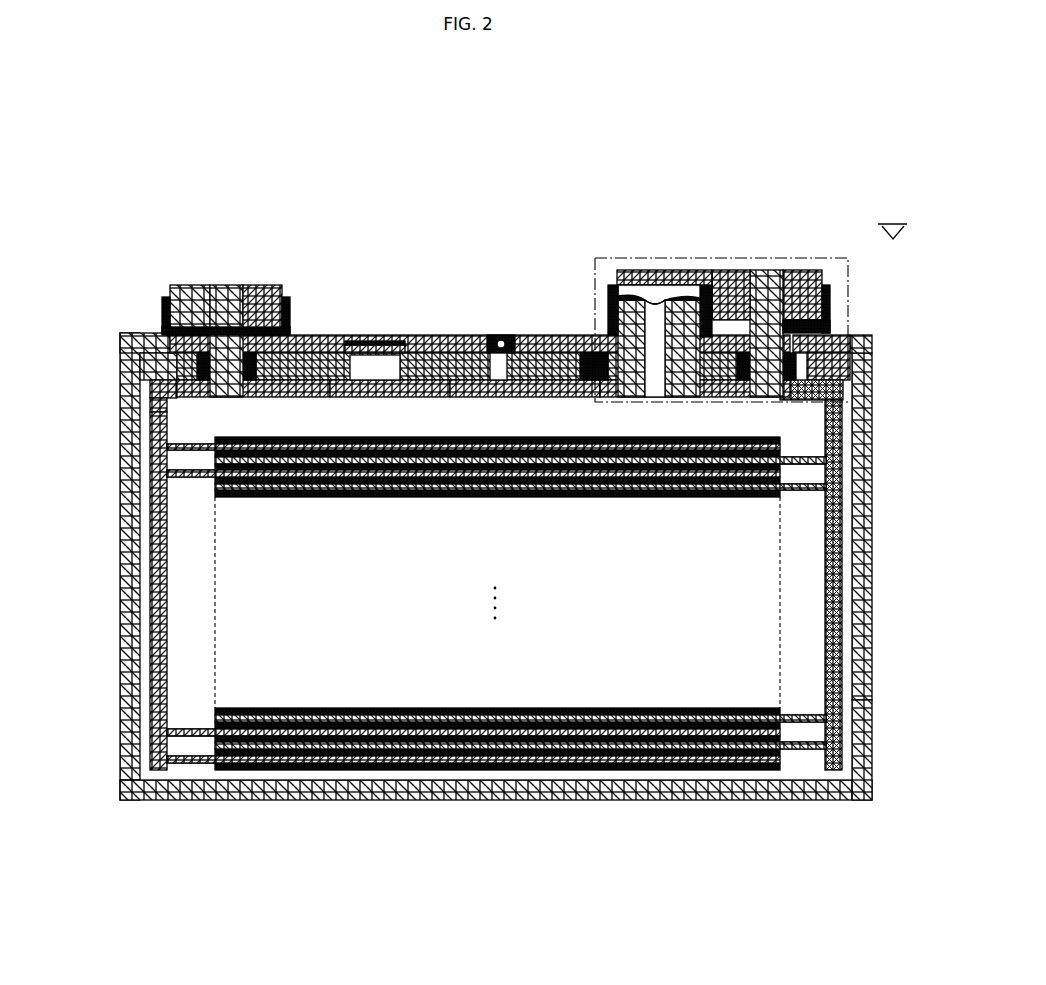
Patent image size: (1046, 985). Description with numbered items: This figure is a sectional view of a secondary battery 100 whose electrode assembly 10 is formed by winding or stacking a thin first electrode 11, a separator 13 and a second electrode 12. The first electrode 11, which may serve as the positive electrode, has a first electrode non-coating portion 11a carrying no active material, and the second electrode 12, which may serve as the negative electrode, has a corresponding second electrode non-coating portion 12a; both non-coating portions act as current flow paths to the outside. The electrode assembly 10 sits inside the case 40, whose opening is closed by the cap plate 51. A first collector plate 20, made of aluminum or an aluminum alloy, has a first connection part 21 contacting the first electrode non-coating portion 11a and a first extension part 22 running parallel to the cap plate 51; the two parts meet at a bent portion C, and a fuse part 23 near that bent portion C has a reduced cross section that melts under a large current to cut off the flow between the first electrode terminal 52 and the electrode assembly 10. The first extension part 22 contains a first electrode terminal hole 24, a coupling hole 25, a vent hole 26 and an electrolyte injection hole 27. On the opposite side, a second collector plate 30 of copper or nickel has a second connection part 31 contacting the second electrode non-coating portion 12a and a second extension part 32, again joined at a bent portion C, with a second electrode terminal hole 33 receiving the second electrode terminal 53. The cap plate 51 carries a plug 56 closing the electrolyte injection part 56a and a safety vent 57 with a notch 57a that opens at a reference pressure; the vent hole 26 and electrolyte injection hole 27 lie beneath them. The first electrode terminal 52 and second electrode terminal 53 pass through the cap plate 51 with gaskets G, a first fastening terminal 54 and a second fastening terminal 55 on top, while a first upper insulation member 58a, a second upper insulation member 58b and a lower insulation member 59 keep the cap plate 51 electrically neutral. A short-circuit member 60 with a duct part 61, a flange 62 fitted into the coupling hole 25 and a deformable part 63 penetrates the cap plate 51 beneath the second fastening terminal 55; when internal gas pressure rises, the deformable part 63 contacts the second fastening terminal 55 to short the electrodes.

The secondary battery 100 is at (471, 114).
The electrode assembly 10 is at (496, 651).
The first electrode 11 is at (345, 762).
The first electrode non-coating portion 11a is at (190, 763).
The second electrode 12 is at (685, 768).
The second electrode non-coating portion 12a is at (800, 749).
The separator 13 is at (515, 752).
The first collector plate 20 is at (140, 595).
The first connection part 21 is at (157, 667).
The first extension part 22 is at (150, 375).
The fuse part 23 is at (160, 408).
The first electrode terminal hole 24 is at (255, 390).
The coupling hole 25 is at (645, 388).
The vent hole 26 is at (358, 392).
The electrolyte injection hole 27 is at (497, 390).
The second collector plate 30 is at (845, 597).
The second connection part 31 is at (835, 668).
The second extension part 32 is at (835, 340).
The second electrode terminal hole 33 is at (800, 400).
The case 40 is at (860, 733).
The cap plate 51 is at (420, 345).
The first electrode terminal 52 is at (224, 284).
The second electrode terminal 53 is at (768, 270).
The first fastening terminal 54 is at (262, 285).
The second fastening terminal 55 is at (666, 262).
The plug 56 is at (493, 340).
The electrolyte injection part 56a is at (505, 353).
The safety vent 57 is at (380, 332).
The notch 57a is at (360, 341).
The first upper insulation member 58a is at (167, 298).
The second upper insulation member 58b is at (826, 290).
The lower insulation member 59 is at (868, 342).
The short-circuit member 60 is at (655, 290).
The duct part 61 is at (706, 283).
The flange 62 is at (735, 290).
The deformable part 63 is at (608, 300).
The gaskets G is at (197, 350).
The bent portion C is at (150, 365).